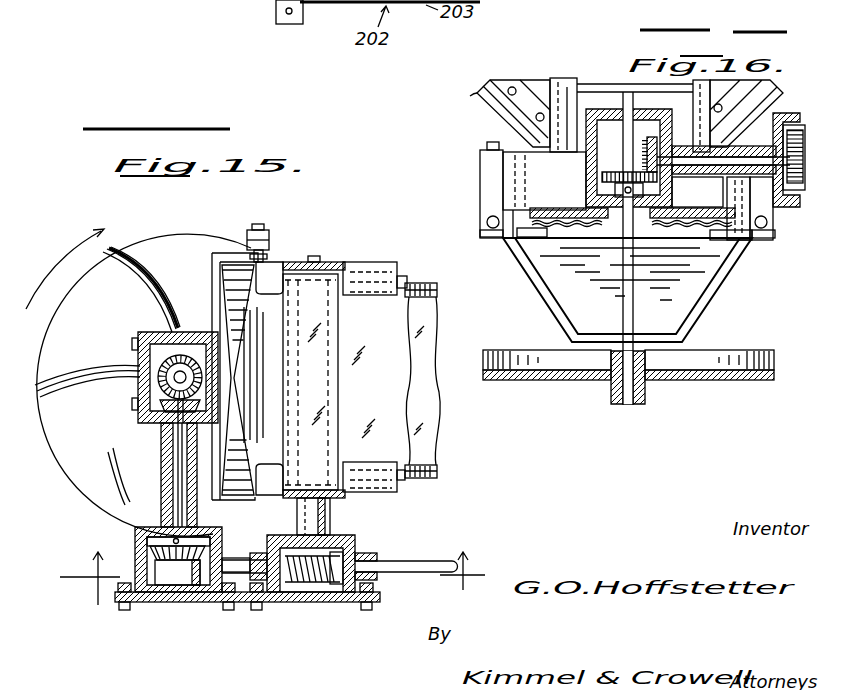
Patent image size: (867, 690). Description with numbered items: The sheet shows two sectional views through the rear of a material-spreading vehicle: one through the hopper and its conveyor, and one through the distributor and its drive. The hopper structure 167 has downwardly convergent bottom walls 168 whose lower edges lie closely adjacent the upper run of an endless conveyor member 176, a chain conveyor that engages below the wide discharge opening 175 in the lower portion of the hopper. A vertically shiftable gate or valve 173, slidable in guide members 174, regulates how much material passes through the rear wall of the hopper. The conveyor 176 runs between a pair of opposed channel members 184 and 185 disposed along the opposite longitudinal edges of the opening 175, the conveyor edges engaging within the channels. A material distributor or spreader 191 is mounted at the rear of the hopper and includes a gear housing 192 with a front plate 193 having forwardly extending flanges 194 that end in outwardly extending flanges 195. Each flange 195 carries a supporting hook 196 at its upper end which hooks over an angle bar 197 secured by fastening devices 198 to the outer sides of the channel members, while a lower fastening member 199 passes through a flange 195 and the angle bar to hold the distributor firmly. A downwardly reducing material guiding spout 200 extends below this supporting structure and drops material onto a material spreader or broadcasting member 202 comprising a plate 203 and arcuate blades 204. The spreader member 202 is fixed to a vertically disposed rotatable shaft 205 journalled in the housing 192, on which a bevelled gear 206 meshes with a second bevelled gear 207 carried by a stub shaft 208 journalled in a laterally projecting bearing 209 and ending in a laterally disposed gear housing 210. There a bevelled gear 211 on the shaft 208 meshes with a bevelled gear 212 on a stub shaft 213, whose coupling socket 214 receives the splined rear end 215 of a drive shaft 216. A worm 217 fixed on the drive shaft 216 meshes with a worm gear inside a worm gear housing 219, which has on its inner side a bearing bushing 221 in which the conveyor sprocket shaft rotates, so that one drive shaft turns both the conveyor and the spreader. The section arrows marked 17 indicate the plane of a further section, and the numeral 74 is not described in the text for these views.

In FIG. 15, the section line 17 is at (264, 578).
In FIG. 16, the bracket plate 74 is at (760, 86).
In FIG. 16, the hopper structure 167 is at (539, 79).
In FIG. 16, the downwardly convergent bottom walls 168 is at (470, 96).
In FIG. 16, the vertically shiftable gate or valve 173 is at (588, 92).
In FIG. 16, the guide members 174 is at (553, 80).
In FIG. 16, the discharge opening 175 is at (570, 92).
In FIG. 15, the endless conveyor member 176 is at (410, 424).
In FIG. 16, the endless conveyor member 176 is at (577, 232).
In FIG. 15, the channel member 184 is at (360, 458).
In FIG. 16, the channel member 184 is at (740, 243).
In FIG. 15, the channel member 185 is at (375, 265).
In FIG. 16, the channel member 185 is at (513, 238).
In FIG. 15, the material distributor or spreader 191 is at (147, 325).
In FIG. 15, the gear housing 192 is at (193, 332).
In FIG. 16, the gear housing 192 is at (685, 160).
In FIG. 15, the front plate 193 is at (212, 284).
In FIG. 16, the front plate 193 is at (544, 194).
In FIG. 15, the forwardly extending flanges 194 is at (222, 265).
In FIG. 15, the outwardly extending flanges 195 is at (266, 240).
In FIG. 16, the outwardly extending flanges 195 is at (482, 184).
In FIG. 15, the supporting hook 196 is at (272, 252).
In FIG. 16, the supporting hook 196 is at (488, 148).
In FIG. 15, the angle bar 197 is at (259, 247).
In FIG. 15, the fastening devices 198 is at (270, 258).
In FIG. 15, the lower fastening member 199 is at (252, 236).
In FIG. 16, the lower fastening member 199 is at (488, 218).
In FIG. 15, the material guiding spout 200 is at (237, 372).
In FIG. 16, the material guiding spout 200 is at (698, 294).
In FIG. 15, the material spreader or broadcasting member 202 is at (156, 232).
In FIG. 16, the material spreader or broadcasting member 202 is at (707, 388).
In FIG. 16, the plate 203 is at (570, 377).
In FIG. 16, the arcuate blades 204 is at (744, 363).
In FIG. 15, the vertically disposed rotatable shaft 205 is at (172, 378).
In FIG. 16, the vertically disposed rotatable shaft 205 is at (630, 404).
In FIG. 15, the bevelled gear 206 is at (162, 395).
In FIG. 16, the bevelled gear 206 is at (608, 173).
In FIG. 15, the second bevelled gear 207 is at (152, 424).
In FIG. 16, the second bevelled gear 207 is at (725, 172).
In FIG. 15, the stub shaft 208 is at (180, 473).
In FIG. 16, the stub shaft 208 is at (760, 84).
In FIG. 15, the laterally projecting bearing 209 is at (168, 495).
In FIG. 16, the laterally projecting bearing 209 is at (695, 245).
In FIG. 15, the laterally disposed gear housing 210 is at (135, 549).
In FIG. 16, the laterally disposed gear housing 210 is at (776, 120).
In FIG. 15, the bevelled gear 211 is at (152, 566).
In FIG. 16, the bevelled gear 211 is at (785, 195).
In FIG. 15, the bevelled gear 212 is at (200, 566).
In FIG. 15, the stub shaft 213 is at (247, 581).
In FIG. 15, the coupling socket 214 is at (268, 583).
In FIG. 15, the splined rear end 215 is at (283, 578).
In FIG. 15, the drive shaft 216 is at (400, 560).
In FIG. 15, the worm 217 is at (328, 578).
In FIG. 15, the worm gear housing 219 is at (343, 531).
In FIG. 15, the bearing bushing 221 is at (318, 498).